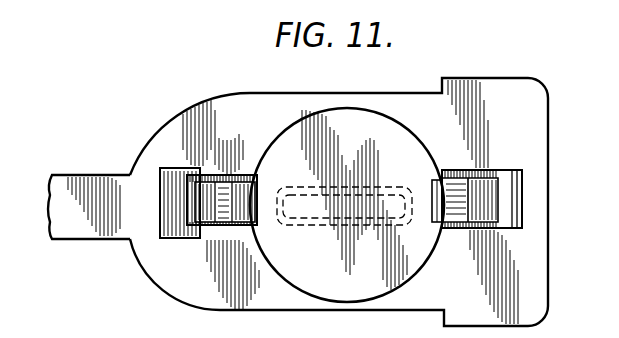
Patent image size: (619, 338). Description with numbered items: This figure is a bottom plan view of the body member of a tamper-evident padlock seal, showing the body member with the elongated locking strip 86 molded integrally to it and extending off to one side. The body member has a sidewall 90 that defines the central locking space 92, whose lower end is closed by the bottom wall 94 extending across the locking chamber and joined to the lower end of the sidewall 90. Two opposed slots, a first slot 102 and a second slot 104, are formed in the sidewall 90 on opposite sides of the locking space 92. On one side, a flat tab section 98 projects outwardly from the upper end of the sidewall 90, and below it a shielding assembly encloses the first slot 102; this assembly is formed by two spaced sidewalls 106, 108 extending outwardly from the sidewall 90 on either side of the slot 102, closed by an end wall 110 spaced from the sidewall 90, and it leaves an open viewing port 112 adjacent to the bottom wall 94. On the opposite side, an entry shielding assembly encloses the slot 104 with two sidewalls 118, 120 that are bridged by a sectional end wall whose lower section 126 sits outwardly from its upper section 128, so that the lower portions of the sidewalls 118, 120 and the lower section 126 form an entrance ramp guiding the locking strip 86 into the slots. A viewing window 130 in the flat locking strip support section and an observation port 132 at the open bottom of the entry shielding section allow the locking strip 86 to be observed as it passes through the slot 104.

The locking strip 86 is at (67, 233).
The sidewall 90 is at (442, 170).
The locking space 92 is at (306, 186).
The bottom wall 94 is at (327, 265).
The flat tab section 98 is at (548, 290).
The first slot 102 is at (428, 233).
The slot 104 is at (257, 178).
The sidewall 106 is at (482, 170).
The sidewall 108 is at (482, 230).
The end wall 110 is at (508, 178).
The viewing port 112 is at (490, 205).
The sidewall 118 is at (195, 188).
The sidewall 120 is at (187, 237).
The lower section 126 is at (186, 225).
The upper section 128 is at (205, 182).
The viewing window 130 is at (162, 203).
The observation port 132 is at (227, 182).